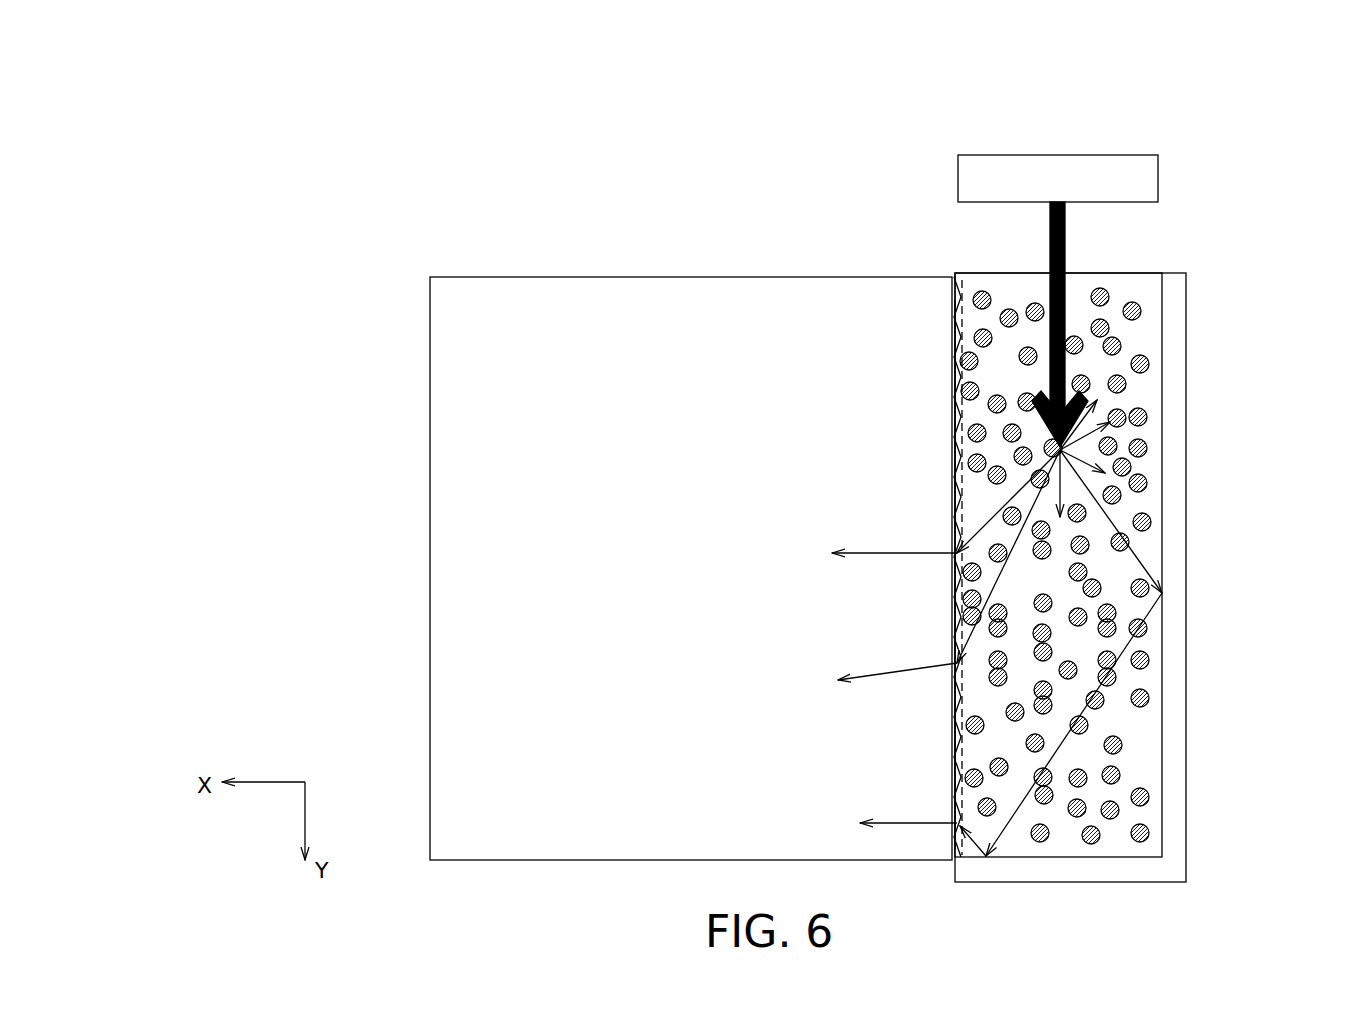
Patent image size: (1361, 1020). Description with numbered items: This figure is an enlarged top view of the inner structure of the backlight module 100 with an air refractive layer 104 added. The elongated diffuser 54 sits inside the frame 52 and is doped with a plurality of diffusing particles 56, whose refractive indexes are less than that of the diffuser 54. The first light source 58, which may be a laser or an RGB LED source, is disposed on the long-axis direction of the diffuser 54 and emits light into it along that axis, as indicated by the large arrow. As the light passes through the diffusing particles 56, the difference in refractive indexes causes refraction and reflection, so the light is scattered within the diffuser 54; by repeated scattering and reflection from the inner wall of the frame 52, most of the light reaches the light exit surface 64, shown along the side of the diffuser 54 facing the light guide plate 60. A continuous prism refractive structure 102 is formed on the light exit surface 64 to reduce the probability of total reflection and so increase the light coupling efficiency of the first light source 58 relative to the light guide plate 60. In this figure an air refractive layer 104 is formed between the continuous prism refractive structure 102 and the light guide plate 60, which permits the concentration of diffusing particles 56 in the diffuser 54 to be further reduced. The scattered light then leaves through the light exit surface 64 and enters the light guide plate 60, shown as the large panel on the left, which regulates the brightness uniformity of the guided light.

The backlight module 100 is at (1233, 113).
The frame 52 is at (1184, 295).
The diffuser 54 is at (1128, 293).
The diffusing particles 56 is at (1150, 361).
The first light source 58 is at (1068, 172).
The light guide plate 60 is at (500, 293).
The light exit surface 64 is at (960, 305).
The continuous prism refractive structure 102 is at (954, 298).
The air refractive layer 104 is at (955, 325).